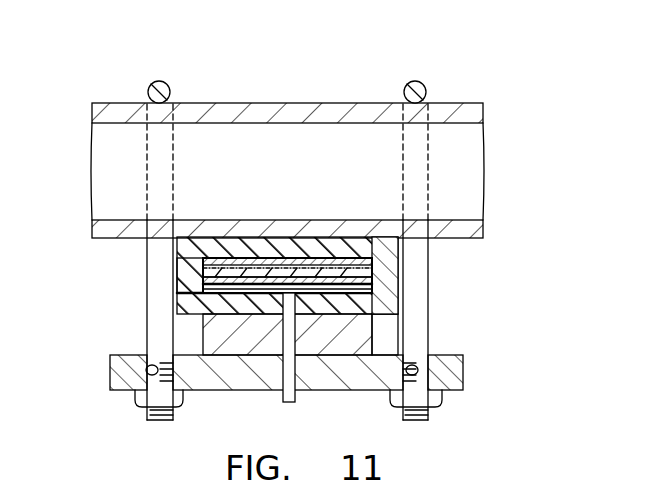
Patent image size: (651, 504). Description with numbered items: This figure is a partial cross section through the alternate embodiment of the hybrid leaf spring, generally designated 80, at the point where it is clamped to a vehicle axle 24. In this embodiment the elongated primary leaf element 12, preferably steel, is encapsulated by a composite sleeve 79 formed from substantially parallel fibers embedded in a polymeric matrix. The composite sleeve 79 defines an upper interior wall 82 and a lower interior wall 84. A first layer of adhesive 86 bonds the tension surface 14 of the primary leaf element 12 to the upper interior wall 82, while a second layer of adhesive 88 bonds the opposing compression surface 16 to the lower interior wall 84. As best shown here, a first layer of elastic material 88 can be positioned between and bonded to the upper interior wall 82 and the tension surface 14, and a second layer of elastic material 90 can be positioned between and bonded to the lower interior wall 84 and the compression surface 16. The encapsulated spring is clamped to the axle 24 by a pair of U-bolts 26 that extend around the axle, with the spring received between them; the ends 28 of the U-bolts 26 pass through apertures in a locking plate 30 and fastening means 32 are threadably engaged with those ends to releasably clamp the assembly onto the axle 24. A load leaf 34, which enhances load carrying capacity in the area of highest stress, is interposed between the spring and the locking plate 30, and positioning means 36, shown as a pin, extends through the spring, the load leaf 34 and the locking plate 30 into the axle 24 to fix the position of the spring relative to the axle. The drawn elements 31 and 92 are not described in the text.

The alternate embodiment leaf spring 80 is at (204, 72).
The axle 24 is at (292, 103).
The U-bolts 26 is at (152, 84).
The ends of the U-bolts 28 is at (163, 421).
The locking plate 30 is at (248, 391).
The nut 31 is at (130, 397).
The fastening means 32 is at (152, 379).
The load leaf 34 is at (205, 336).
The positioning means 36 is at (293, 399).
The upper interior wall 82 is at (237, 250).
The composite sleeve 79 is at (185, 260).
The lower interior wall 84 is at (203, 294).
The first layer of adhesive 86 is at (286, 257).
The tension surface 14 is at (318, 257).
The primary leaf element 12 is at (336, 259).
The second layer of elastic material 90 is at (372, 264).
The contact strip 92 is at (376, 284).
The compression surface 16 is at (372, 294).
The second layer of adhesive 88 is at (389, 334).